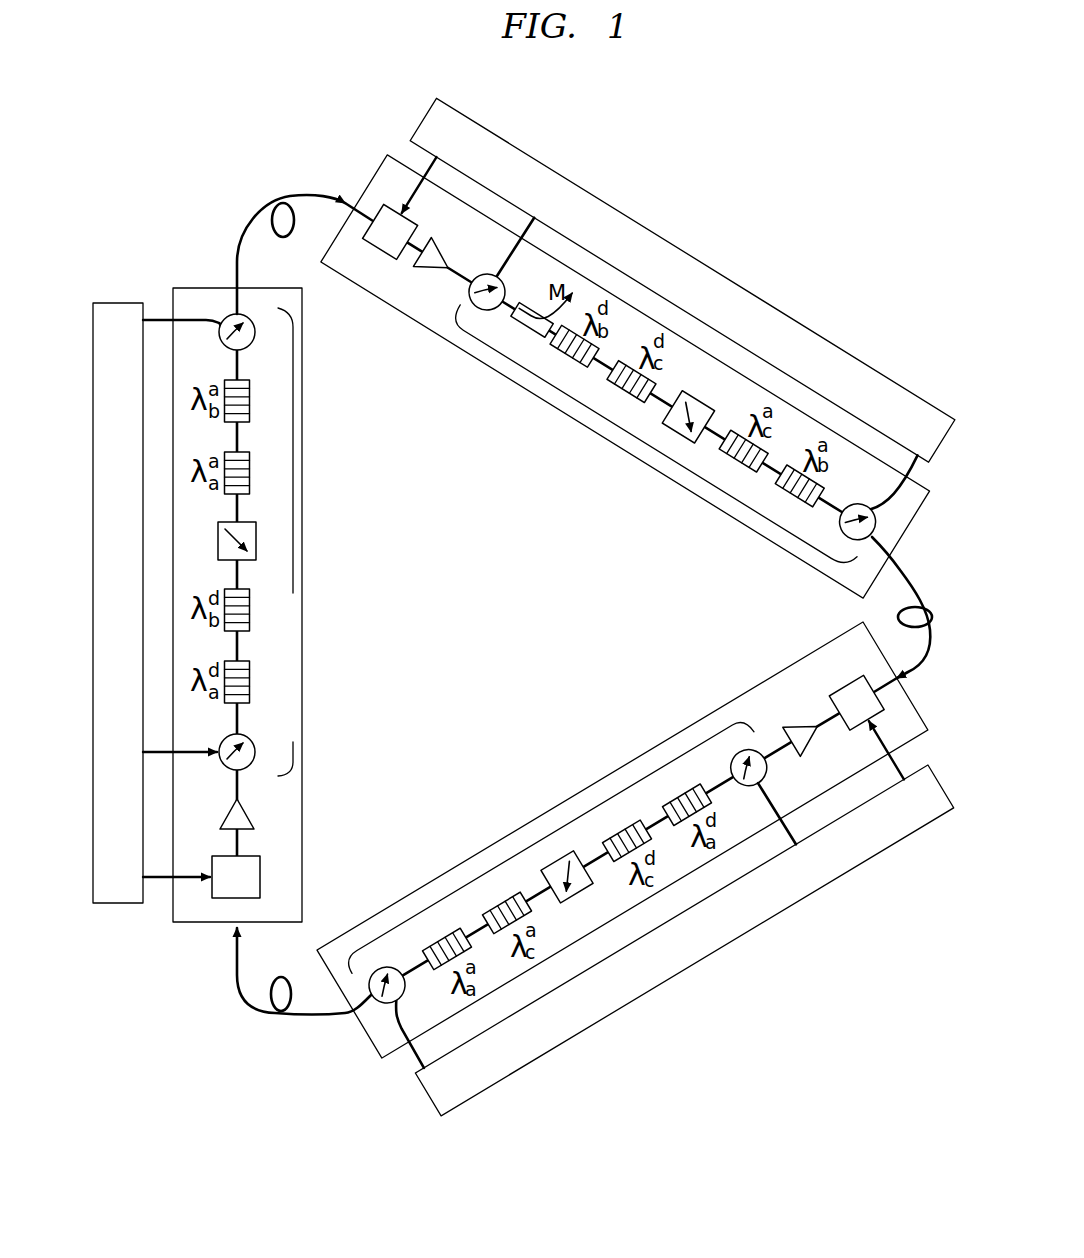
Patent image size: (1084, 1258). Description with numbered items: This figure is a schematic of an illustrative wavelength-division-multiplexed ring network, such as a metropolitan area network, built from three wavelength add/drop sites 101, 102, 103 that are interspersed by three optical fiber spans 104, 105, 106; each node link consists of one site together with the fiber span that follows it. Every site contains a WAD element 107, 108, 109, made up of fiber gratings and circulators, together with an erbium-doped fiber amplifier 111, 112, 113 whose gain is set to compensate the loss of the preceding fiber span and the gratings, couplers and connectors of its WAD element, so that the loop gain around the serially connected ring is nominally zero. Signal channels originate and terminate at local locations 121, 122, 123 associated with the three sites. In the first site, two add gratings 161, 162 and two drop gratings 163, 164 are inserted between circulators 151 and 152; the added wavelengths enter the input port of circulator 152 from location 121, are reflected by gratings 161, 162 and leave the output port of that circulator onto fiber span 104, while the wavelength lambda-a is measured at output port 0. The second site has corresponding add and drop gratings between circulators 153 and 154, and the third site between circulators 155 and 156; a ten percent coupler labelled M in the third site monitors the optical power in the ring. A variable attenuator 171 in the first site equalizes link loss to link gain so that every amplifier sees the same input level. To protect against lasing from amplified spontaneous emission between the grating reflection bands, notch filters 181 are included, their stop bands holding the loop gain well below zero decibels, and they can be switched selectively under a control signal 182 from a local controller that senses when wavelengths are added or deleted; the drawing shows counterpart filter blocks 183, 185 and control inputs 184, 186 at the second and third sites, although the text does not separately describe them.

The output port 0 is at (193, 757).
The wavelength add/drop site WAD1 101 is at (303, 515).
The wavelength add/drop site WAD2 102 is at (585, 788).
The wavelength add/drop site WAD3 103 is at (585, 427).
The optical fiber span 104 is at (313, 191).
The optical fiber span 105 is at (237, 985).
The optical fiber span 106 is at (929, 656).
The WAD element 107 is at (282, 542).
The WAD element 108 is at (560, 865).
The WAD element 109 is at (673, 407).
The optical amplifier 111 is at (246, 815).
The optical amplifier 112 is at (790, 720).
The optical amplifier 113 is at (450, 252).
The location 121 is at (120, 303).
The location 122 is at (699, 962).
The location 123 is at (699, 261).
The circulator 151 is at (253, 752).
The circulator 152 is at (253, 332).
The circulator 153 is at (766, 772).
The circulator 154 is at (401, 999).
The circulator 155 is at (502, 278).
The circulator 156 is at (857, 503).
The grating 161 is at (253, 401).
The grating 162 is at (253, 473).
The grating 163 is at (253, 610).
The grating 164 is at (253, 682).
The variable attenuator 171 is at (252, 541).
The notch filter 181 is at (261, 881).
The control signal 182 is at (186, 872).
The noise filter NF of WAD2 183 is at (843, 679).
The add signal input to noise filter 183 184 is at (880, 749).
The noise filter NF of WAD3 185 is at (381, 249).
The add signal input to noise filter 185 186 is at (412, 199).